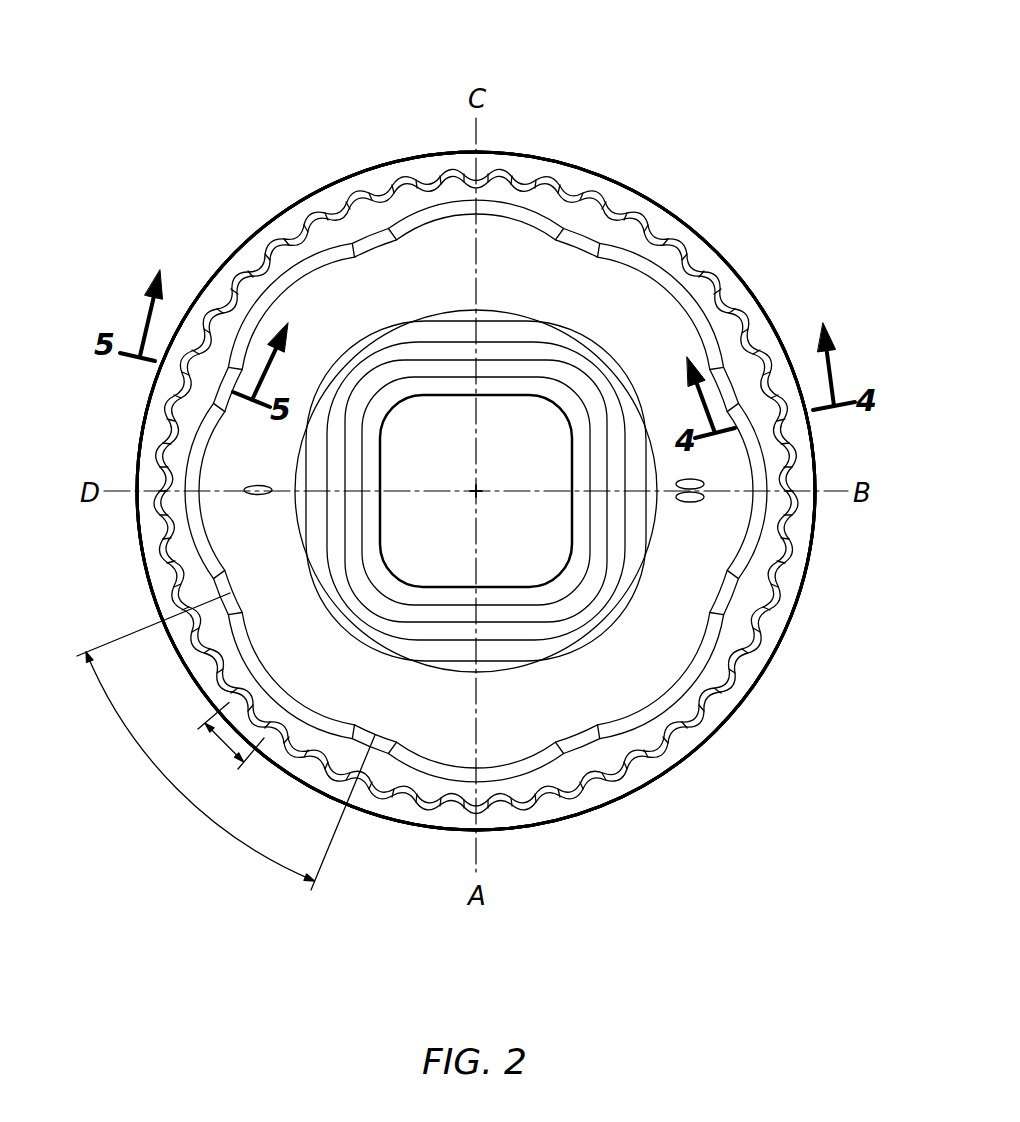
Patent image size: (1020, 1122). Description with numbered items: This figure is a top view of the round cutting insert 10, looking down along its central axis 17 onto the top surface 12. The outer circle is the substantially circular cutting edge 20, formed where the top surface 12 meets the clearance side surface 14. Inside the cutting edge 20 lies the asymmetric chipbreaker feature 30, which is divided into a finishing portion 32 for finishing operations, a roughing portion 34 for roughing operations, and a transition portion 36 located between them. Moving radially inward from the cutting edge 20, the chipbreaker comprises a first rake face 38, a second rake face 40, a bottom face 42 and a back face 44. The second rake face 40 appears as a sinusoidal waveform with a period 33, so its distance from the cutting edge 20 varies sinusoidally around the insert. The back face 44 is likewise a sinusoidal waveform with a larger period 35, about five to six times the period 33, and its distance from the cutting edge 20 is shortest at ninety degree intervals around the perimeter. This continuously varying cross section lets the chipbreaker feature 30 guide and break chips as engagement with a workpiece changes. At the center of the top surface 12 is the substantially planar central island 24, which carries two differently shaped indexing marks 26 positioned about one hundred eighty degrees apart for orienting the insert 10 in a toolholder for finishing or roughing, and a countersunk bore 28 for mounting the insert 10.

The round cutting insert 10 is at (730, 78).
The top surface 12 is at (570, 277).
The clearance side surface 14 is at (690, 768).
The central axis 17 is at (482, 488).
The cutting edge 20 is at (718, 247).
The central island 24 is at (387, 273).
The indexing marks 26 is at (262, 486).
The countersunk bore 28 is at (398, 440).
The asymmetric chipbreaker feature 30 is at (653, 202).
The finishing portion 32 is at (797, 441).
The period 33 is at (226, 745).
The roughing portion 34 is at (135, 513).
The period 35 is at (252, 838).
The transition portion 36 is at (448, 163).
The first rake face 38 is at (563, 177).
The second rake face 40 is at (548, 182).
The bottom face 42 is at (518, 195).
The back face 44 is at (503, 210).